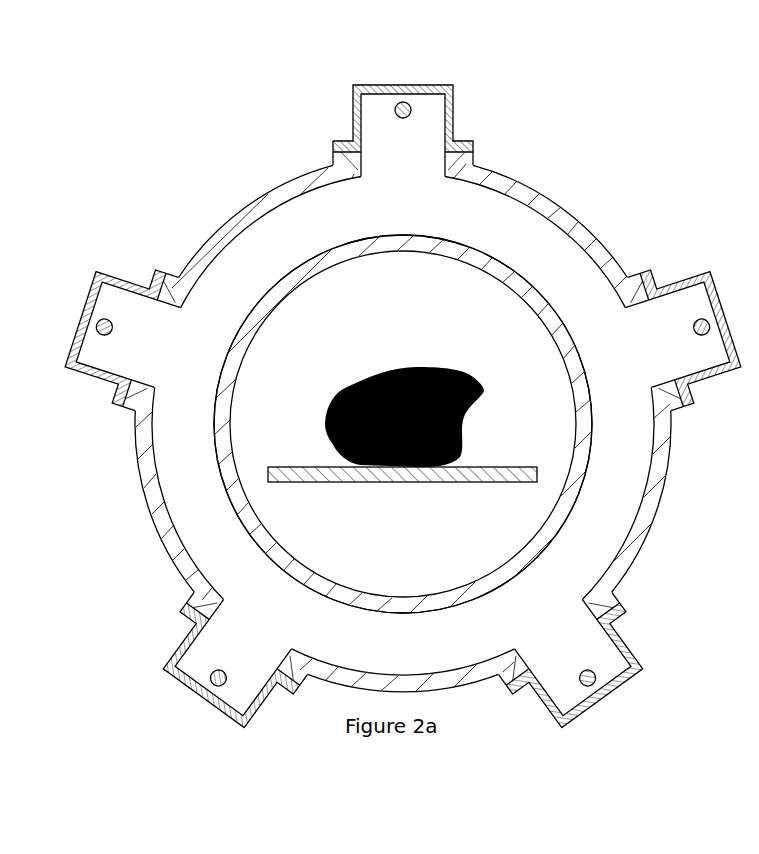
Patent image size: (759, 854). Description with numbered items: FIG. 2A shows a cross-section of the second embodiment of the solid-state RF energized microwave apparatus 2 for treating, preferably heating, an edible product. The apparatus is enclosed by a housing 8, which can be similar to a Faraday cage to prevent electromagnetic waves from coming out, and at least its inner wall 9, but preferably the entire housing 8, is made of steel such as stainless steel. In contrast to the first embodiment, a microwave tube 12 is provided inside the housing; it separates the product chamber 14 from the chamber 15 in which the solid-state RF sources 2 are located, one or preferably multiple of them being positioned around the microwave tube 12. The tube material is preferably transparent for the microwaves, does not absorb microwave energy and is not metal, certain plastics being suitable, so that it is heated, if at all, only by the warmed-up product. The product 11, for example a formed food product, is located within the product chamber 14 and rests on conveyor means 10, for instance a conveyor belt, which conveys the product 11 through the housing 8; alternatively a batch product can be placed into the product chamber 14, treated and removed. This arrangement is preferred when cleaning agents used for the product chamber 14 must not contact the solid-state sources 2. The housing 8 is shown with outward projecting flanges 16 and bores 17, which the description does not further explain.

The solid-state RF source 2 is at (332, 85).
The housing 8 is at (199, 274).
The inner wall 9 is at (233, 236).
The conveyor means 10 is at (323, 475).
The product 11 is at (448, 365).
The microwave tube 12 is at (595, 292).
The product chamber 14 is at (491, 315).
The chamber 15 is at (619, 283).
The top flange 16 is at (367, 92).
The bore 17 is at (405, 107).